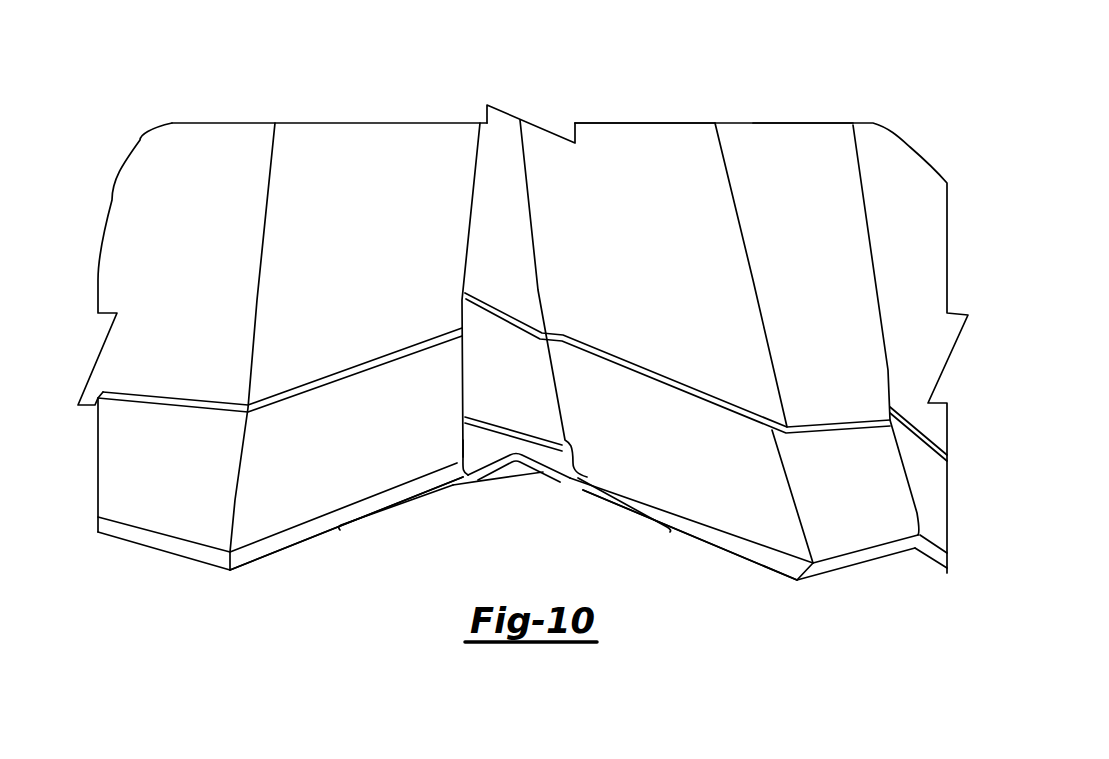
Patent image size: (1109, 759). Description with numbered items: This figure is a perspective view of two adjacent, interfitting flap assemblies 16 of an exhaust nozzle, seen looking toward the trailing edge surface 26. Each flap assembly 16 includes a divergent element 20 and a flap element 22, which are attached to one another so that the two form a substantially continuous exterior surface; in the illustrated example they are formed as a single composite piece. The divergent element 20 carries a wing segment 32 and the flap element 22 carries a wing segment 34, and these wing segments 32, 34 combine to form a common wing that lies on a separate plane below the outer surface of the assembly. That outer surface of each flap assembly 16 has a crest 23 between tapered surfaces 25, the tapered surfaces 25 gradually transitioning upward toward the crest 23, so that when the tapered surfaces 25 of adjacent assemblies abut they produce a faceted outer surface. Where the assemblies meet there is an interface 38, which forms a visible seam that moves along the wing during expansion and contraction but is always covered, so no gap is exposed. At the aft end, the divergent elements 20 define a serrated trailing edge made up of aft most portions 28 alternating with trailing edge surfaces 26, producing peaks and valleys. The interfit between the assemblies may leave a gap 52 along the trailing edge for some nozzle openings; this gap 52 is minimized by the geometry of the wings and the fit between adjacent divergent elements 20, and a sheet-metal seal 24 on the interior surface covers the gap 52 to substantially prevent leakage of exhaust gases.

The flap assembly 16 is at (280, 590).
The divergent element 20 is at (148, 513).
The flap element 22 is at (373, 260).
The crest 23 is at (722, 145).
The seal 24 is at (483, 468).
The tapered surface 25 is at (633, 150).
The trailing edge surface 26 is at (305, 540).
The aft most portion 28 is at (231, 575).
The wing segment 32 is at (513, 255).
The wing segment 34 is at (527, 407).
The interface 38 is at (478, 178).
The gap 52 is at (485, 447).